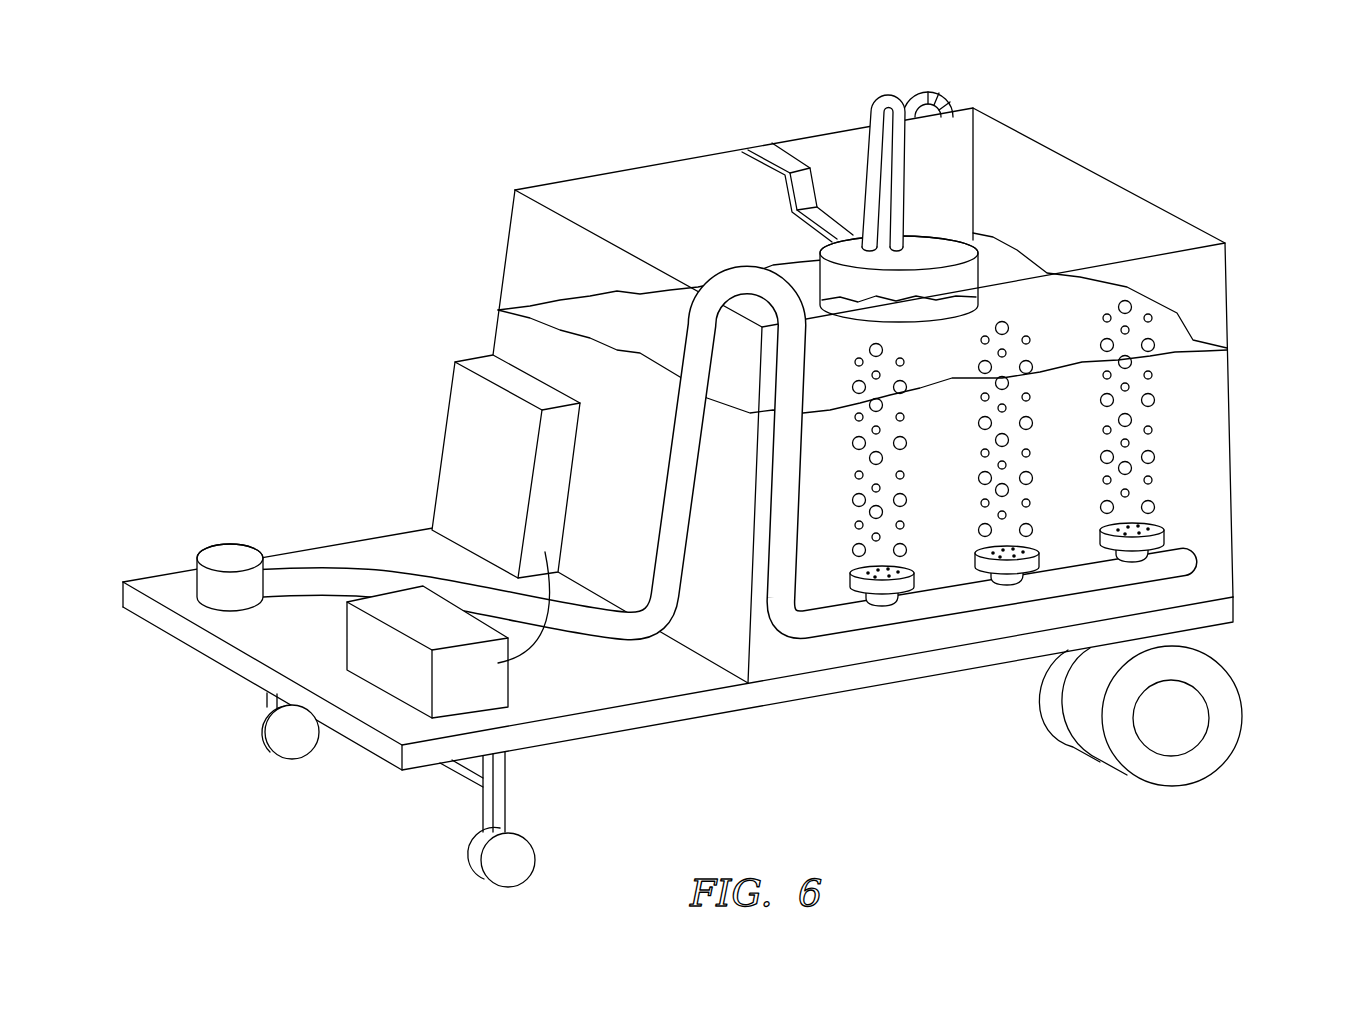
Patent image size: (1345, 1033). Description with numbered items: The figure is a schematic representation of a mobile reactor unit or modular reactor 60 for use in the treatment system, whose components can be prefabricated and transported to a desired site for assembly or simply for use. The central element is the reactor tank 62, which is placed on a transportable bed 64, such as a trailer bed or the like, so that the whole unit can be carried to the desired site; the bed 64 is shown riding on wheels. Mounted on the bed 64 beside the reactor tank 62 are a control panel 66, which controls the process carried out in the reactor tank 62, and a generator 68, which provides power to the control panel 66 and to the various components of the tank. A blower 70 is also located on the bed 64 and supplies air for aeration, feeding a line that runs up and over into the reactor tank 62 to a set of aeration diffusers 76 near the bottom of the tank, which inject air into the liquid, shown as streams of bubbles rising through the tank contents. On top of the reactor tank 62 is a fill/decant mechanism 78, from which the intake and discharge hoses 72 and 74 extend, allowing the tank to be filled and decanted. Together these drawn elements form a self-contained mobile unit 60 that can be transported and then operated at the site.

The mobile reactor unit 60 is at (650, 133).
The reactor tank 62 is at (1213, 387).
The transportable bed 64 is at (270, 653).
The control panel 66 is at (452, 382).
The generator 68 is at (498, 677).
The blower 70 is at (228, 540).
The intake hose 72 is at (870, 84).
The discharge hose 74 is at (946, 72).
The aeration diffusers 76 is at (886, 604).
The fill/decant mechanism 78 is at (958, 233).